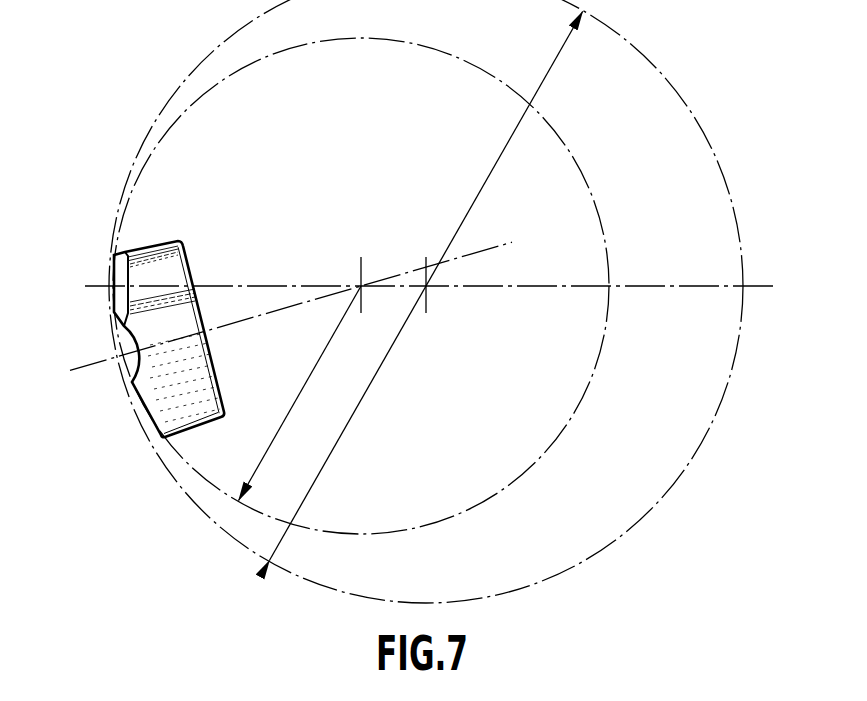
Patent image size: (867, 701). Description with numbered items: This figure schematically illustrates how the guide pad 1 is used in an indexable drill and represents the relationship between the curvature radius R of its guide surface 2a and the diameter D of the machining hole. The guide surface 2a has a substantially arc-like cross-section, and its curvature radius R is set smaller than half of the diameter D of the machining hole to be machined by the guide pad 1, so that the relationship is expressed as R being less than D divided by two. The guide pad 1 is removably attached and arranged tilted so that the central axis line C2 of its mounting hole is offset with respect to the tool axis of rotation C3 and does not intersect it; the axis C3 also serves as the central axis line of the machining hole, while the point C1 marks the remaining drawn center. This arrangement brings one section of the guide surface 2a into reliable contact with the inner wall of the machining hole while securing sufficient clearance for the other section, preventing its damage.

The guide pad 1 is at (157, 267).
The guide surface 2a is at (112, 272).
The rotation center of tool body C1 is at (359, 285).
The central axis line of the mounting hole C2 is at (87, 368).
The tool axis of rotation C3 is at (428, 290).
The curvature radius R is at (361, 286).
The diameter of guide hole D is at (426, 301).